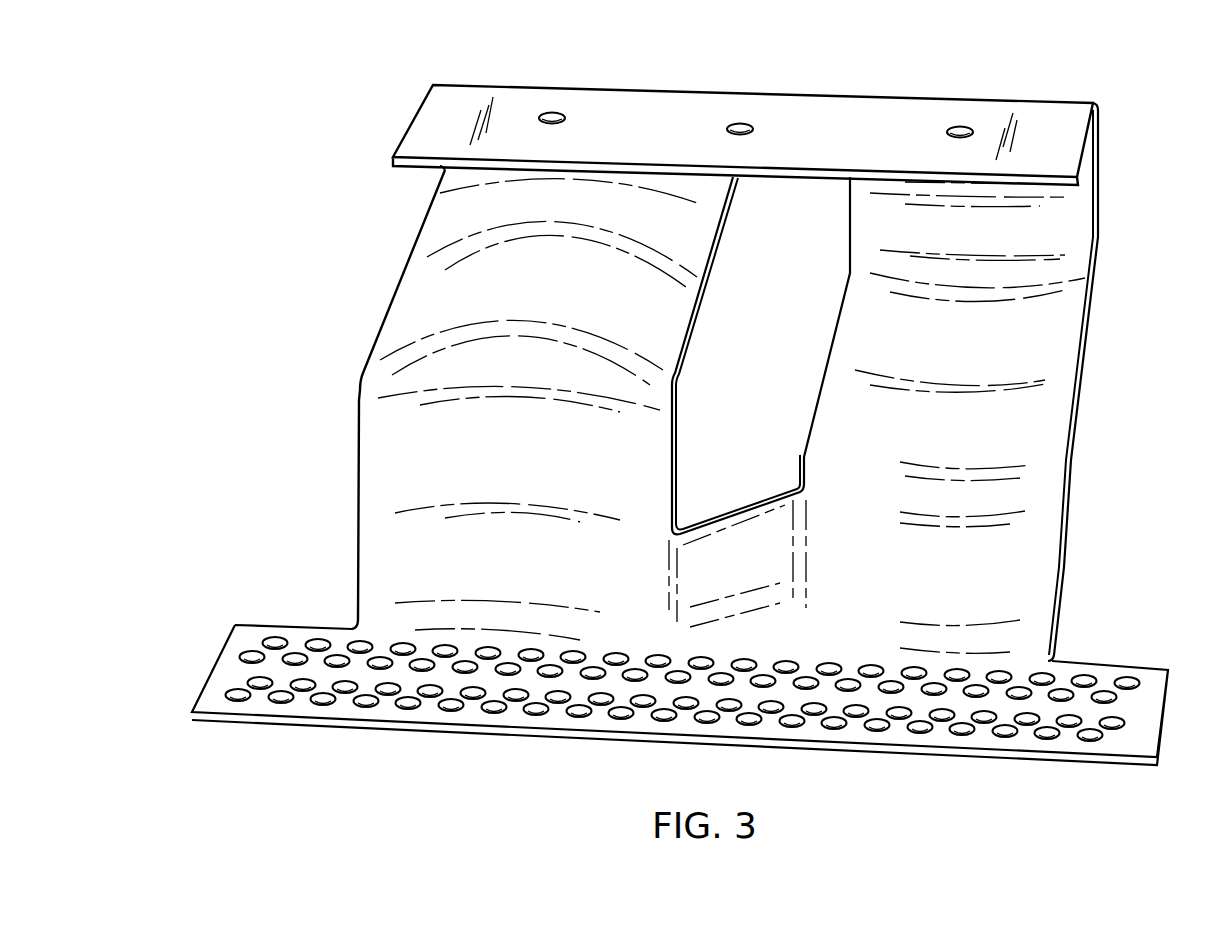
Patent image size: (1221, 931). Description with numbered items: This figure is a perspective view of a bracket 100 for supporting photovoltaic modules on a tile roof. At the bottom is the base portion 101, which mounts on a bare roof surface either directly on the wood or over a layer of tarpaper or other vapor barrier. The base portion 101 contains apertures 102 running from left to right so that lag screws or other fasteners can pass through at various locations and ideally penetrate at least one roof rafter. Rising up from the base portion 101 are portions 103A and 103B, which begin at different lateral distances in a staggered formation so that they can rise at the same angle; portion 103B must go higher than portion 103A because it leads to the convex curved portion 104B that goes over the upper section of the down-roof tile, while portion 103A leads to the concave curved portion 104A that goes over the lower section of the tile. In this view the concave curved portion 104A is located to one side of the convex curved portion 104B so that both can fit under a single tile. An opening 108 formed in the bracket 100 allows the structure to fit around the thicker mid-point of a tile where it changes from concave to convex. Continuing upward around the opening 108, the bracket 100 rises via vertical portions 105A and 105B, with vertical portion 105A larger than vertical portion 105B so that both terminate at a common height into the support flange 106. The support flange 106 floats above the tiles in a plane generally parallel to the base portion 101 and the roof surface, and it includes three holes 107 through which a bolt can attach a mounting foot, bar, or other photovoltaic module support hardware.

The bracket 100 is at (291, 103).
The base portion 101 is at (232, 673).
The apertures 102 is at (318, 637).
The portion 103A is at (1063, 568).
The portion 103B is at (357, 498).
The concave curved portion 104A is at (1080, 386).
The convex curved portion 104B is at (392, 312).
The vertical portion 105A is at (1103, 193).
The vertical portion 105B is at (432, 168).
The support flange 106 is at (817, 107).
The holes 107 is at (553, 112).
The opening 108 is at (782, 344).